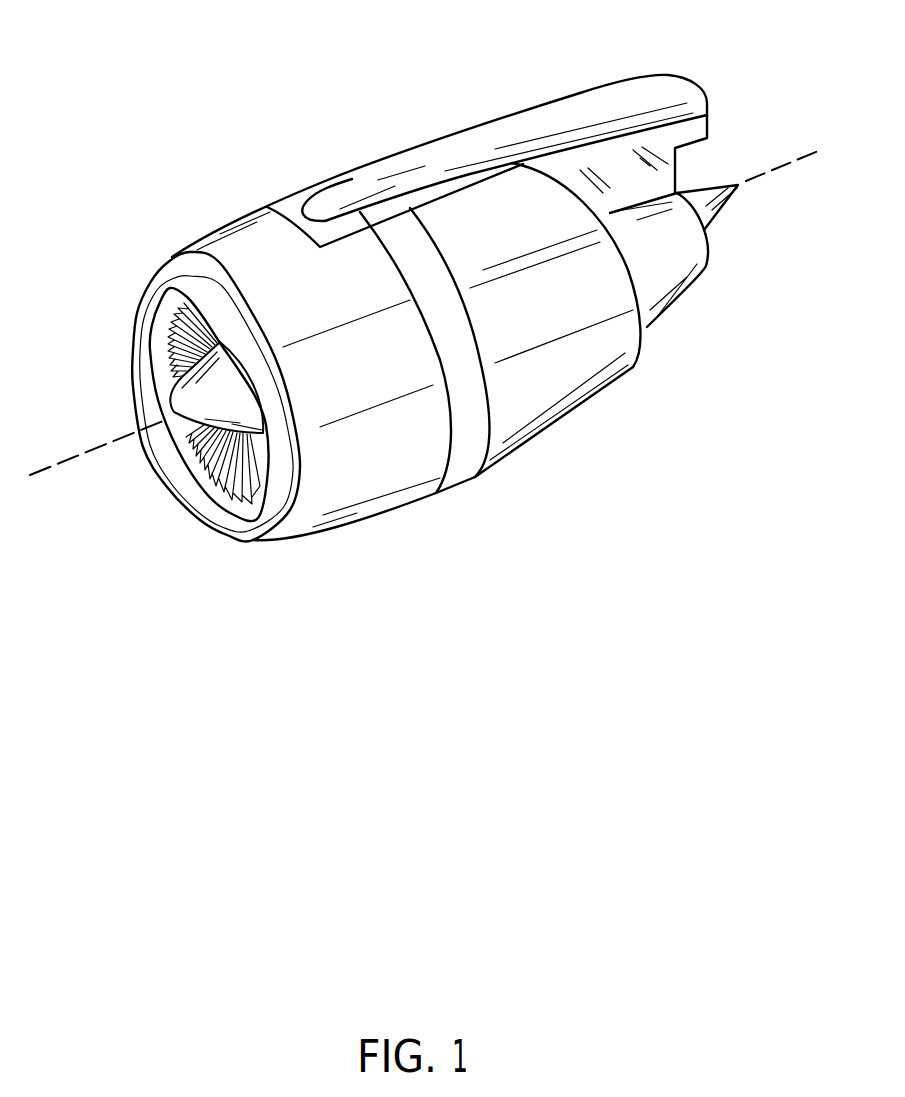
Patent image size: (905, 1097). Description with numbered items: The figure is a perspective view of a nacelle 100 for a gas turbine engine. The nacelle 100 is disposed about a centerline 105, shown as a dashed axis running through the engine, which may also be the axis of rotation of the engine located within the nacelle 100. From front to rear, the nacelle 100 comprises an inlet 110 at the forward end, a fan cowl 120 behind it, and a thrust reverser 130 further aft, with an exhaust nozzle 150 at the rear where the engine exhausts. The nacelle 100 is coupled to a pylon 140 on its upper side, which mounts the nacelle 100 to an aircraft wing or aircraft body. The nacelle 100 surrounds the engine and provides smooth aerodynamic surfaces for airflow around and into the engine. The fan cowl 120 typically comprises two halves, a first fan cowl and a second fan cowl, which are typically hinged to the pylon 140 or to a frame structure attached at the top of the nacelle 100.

The nacelle 100 is at (158, 86).
The centerline 105 is at (102, 447).
The inlet 110 is at (253, 541).
The fan cowl 120 is at (375, 520).
The thrust reverser 130 is at (543, 443).
The pylon 140 is at (550, 103).
The exhaust nozzle 150 is at (675, 298).